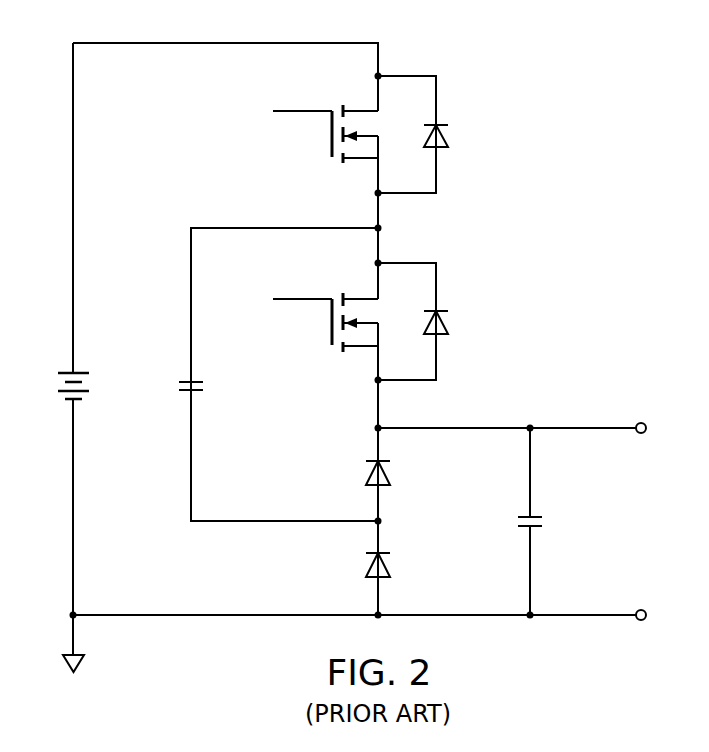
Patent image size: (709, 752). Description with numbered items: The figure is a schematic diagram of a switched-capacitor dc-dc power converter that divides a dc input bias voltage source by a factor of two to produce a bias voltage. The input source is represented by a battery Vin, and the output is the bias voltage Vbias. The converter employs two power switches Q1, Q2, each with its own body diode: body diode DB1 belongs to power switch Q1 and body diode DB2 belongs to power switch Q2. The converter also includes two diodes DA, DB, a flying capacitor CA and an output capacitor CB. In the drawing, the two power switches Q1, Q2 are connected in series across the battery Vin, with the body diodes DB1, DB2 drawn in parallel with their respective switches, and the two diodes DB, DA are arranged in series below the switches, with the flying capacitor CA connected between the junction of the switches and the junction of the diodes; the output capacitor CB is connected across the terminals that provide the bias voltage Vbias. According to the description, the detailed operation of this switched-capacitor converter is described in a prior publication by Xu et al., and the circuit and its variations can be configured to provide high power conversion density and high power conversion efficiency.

The power switch Q1 is at (325, 134).
The power switch Q2 is at (325, 322).
The body diode DB1 is at (463, 140).
The body diode DB2 is at (463, 316).
The diode DB is at (398, 478).
The diode DA is at (398, 570).
The flying capacitor CA is at (211, 374).
The output capacitor CB is at (550, 527).
The dc input bias voltage source Vin is at (91, 382).
The bias voltage Vbias is at (650, 520).